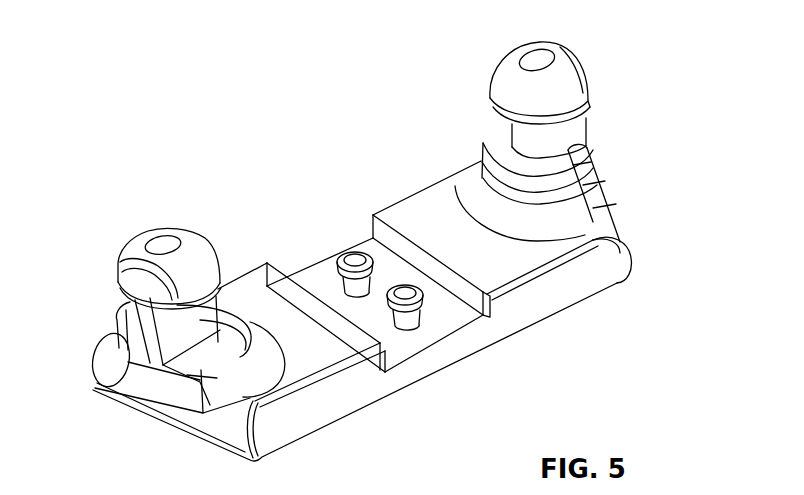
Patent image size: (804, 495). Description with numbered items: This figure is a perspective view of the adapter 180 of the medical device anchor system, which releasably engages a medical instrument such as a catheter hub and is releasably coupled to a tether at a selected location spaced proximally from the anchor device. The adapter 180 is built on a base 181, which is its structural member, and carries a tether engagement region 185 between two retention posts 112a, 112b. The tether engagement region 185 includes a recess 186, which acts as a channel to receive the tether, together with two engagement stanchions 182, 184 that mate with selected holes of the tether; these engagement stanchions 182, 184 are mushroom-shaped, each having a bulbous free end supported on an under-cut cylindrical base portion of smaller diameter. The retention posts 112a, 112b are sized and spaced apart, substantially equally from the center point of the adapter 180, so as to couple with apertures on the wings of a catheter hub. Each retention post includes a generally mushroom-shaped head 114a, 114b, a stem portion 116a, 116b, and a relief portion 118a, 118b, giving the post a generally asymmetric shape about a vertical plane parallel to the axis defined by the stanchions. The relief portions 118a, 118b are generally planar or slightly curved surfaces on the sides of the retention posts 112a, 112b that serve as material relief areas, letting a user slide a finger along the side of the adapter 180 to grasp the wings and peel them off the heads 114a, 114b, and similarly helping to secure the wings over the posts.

The adapter 180 is at (200, 123).
The base 181 is at (545, 318).
The engagement stanchion 182 is at (347, 253).
The engagement stanchion 184 is at (423, 310).
The tether engagement region 185 is at (367, 210).
The recess 186 is at (337, 263).
The retention post 112a is at (589, 90).
The mushroom-shaped head 114a is at (500, 59).
The stem portion 116a is at (503, 128).
The relief portion 118a is at (588, 128).
The retention post 112b is at (118, 251).
The mushroom-shaped head 114b is at (173, 223).
The stem portion 116b is at (206, 322).
The relief portion 118b is at (150, 345).